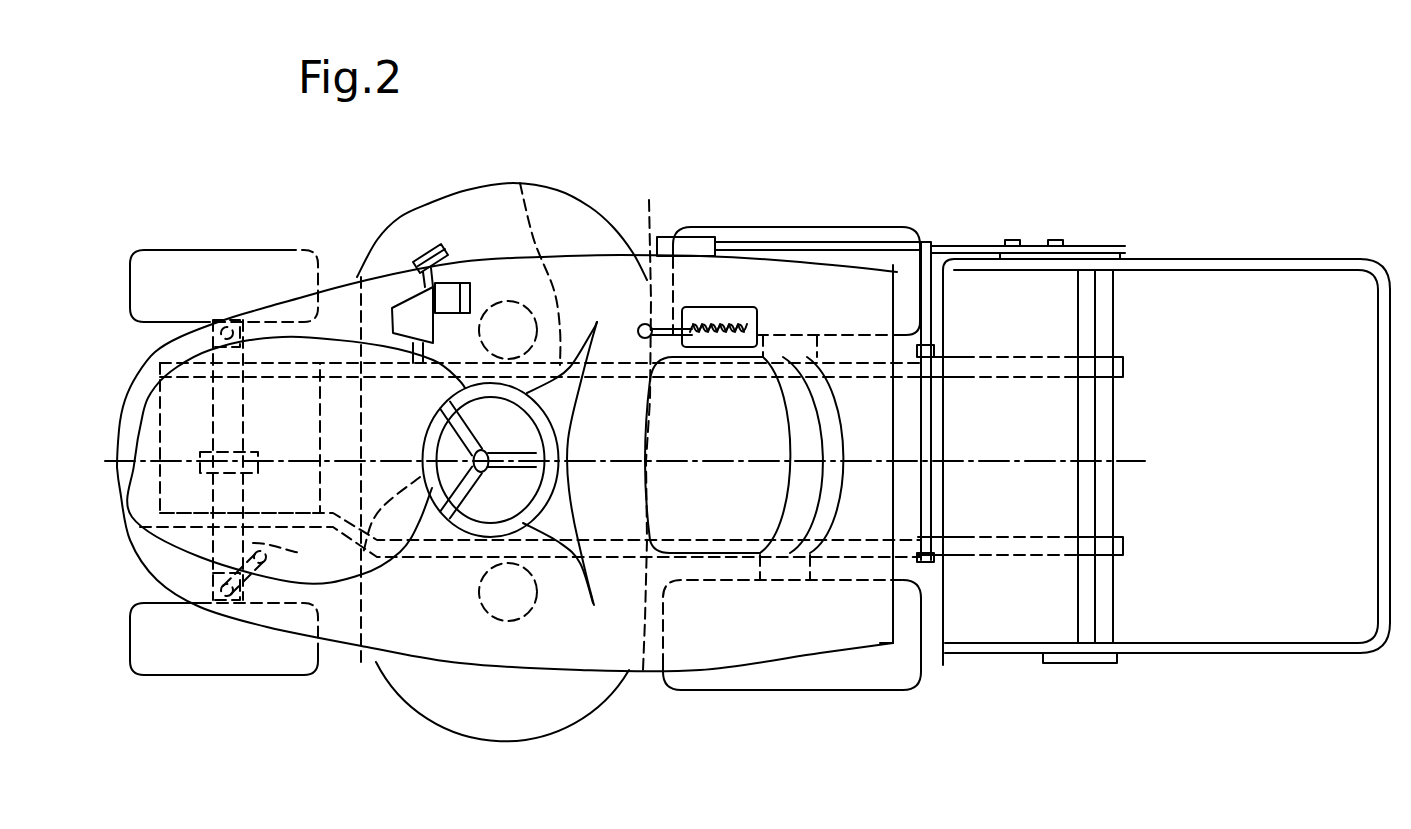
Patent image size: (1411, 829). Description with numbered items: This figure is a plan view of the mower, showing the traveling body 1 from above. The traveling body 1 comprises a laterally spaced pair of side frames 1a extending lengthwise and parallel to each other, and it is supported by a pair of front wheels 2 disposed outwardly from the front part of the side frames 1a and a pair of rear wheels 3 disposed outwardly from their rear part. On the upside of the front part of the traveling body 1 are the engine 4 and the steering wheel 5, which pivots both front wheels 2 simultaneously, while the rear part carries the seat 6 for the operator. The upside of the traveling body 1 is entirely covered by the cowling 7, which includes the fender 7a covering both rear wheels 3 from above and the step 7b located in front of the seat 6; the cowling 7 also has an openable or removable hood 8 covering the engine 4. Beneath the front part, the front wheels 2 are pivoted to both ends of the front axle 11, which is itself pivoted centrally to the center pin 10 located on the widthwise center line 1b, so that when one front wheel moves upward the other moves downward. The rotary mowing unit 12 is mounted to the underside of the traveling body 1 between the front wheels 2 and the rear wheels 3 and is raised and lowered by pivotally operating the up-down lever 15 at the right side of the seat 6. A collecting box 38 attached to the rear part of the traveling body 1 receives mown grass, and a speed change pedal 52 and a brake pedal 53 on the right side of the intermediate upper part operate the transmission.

The traveling body 1 is at (580, 296).
The side frames 1a is at (634, 750).
The center line 1b is at (877, 453).
The front wheels 2 is at (198, 267).
The rear wheels 3 is at (905, 266).
The engine 4 is at (287, 407).
The steering wheel 5 is at (423, 465).
The seat 6 is at (763, 387).
The cowling 7 is at (671, 287).
The fender 7a is at (863, 250).
The step 7b is at (493, 300).
The hood 8 is at (147, 427).
The center pin 10 is at (200, 453).
The front axle 11 is at (287, 547).
The rotary mowing unit 12 is at (437, 693).
The up-down lever 15 is at (690, 300).
The collecting box 38 is at (1213, 287).
The speed change pedal 52 is at (407, 320).
The brake pedal 53 is at (440, 242).